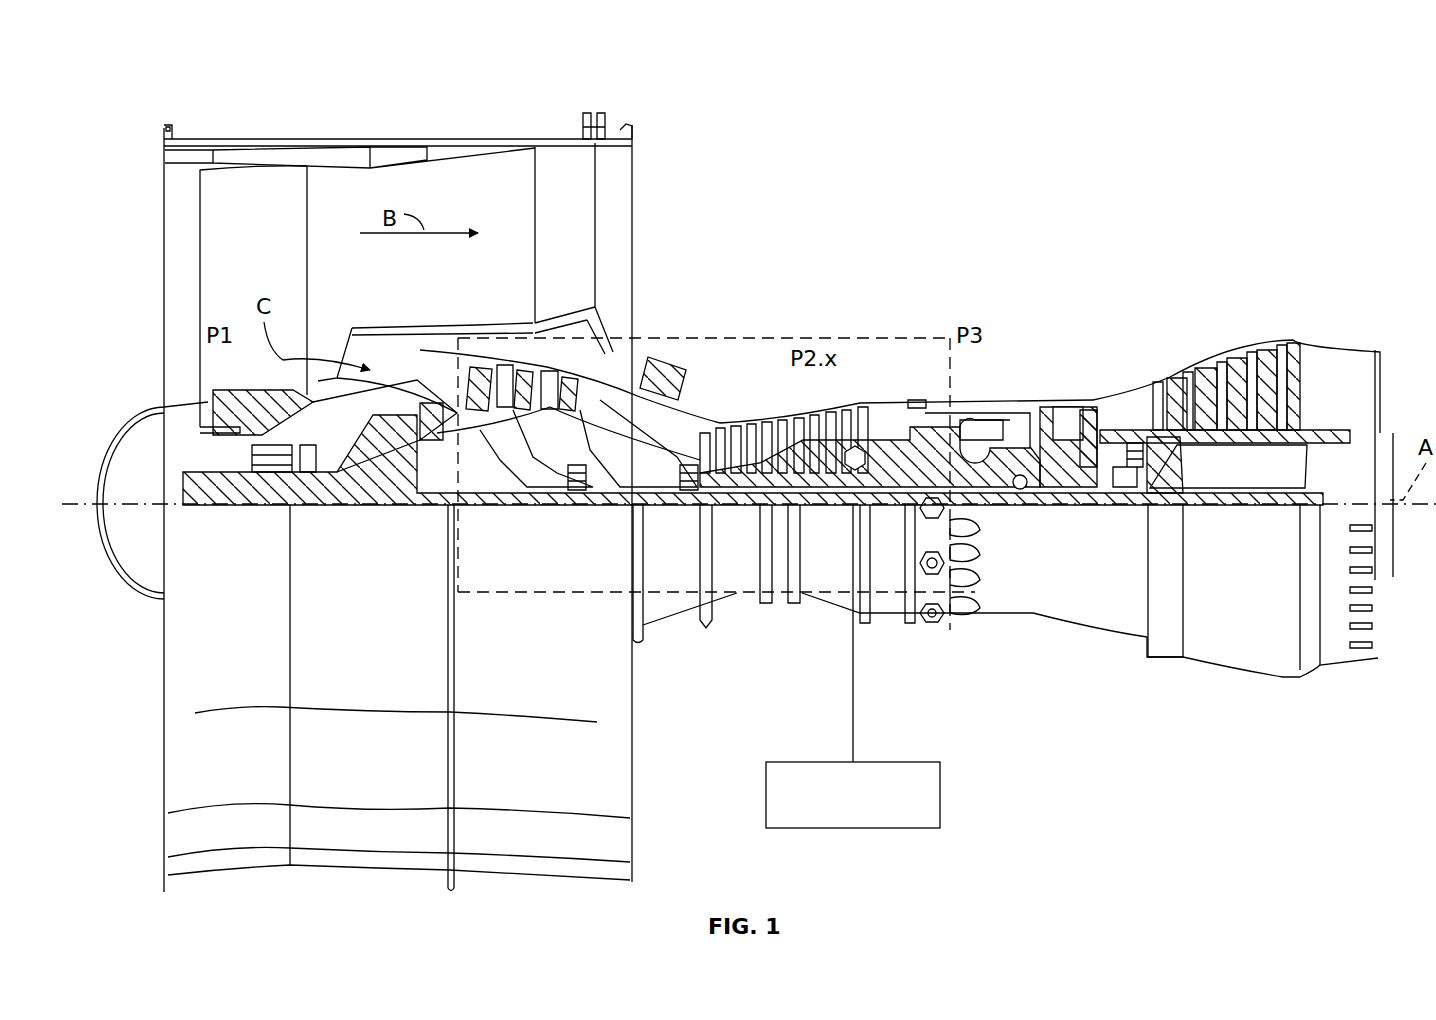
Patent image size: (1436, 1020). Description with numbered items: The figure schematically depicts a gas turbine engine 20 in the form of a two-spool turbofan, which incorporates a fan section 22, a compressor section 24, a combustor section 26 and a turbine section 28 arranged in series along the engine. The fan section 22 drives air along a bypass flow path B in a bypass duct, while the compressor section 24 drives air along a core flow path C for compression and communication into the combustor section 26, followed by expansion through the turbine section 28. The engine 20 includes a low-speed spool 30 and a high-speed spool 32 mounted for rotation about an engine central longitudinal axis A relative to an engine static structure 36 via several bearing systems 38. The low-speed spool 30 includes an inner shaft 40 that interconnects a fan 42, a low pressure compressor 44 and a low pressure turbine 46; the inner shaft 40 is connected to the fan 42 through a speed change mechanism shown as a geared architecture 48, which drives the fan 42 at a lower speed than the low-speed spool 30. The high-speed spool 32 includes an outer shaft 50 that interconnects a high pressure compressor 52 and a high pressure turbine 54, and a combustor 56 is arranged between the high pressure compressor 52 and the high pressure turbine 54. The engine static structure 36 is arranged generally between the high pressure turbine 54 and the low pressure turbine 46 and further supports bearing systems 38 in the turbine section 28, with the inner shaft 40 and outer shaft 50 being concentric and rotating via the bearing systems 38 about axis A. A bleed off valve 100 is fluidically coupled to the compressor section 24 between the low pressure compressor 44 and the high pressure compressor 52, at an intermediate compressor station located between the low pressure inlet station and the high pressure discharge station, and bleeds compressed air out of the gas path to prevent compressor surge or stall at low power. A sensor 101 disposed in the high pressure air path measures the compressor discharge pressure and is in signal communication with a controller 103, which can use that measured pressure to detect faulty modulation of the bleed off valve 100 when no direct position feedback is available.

The gas turbine engine 20 is at (1264, 104).
The fan section 22 is at (258, 136).
The compressor section 24 is at (782, 303).
The combustor section 26 is at (962, 297).
The turbine section 28 is at (1142, 298).
The low-speed spool 30 is at (832, 512).
The high-speed spool 32 is at (907, 457).
The engine static structure 36 is at (893, 622).
The bearing systems 38 is at (287, 463).
The inner shaft 40 is at (690, 480).
The fan 42 is at (262, 236).
The low pressure compressor 44 is at (547, 383).
The low pressure turbine 46 is at (1223, 358).
The geared architecture 48 is at (400, 473).
The outer shaft 50 is at (1023, 482).
The high pressure compressor 52 is at (810, 470).
The high pressure turbine 54 is at (1073, 410).
The combustor 56 is at (983, 427).
The bleed off valve 100 is at (677, 363).
The sensor 101 is at (857, 482).
The controller 103 is at (918, 764).